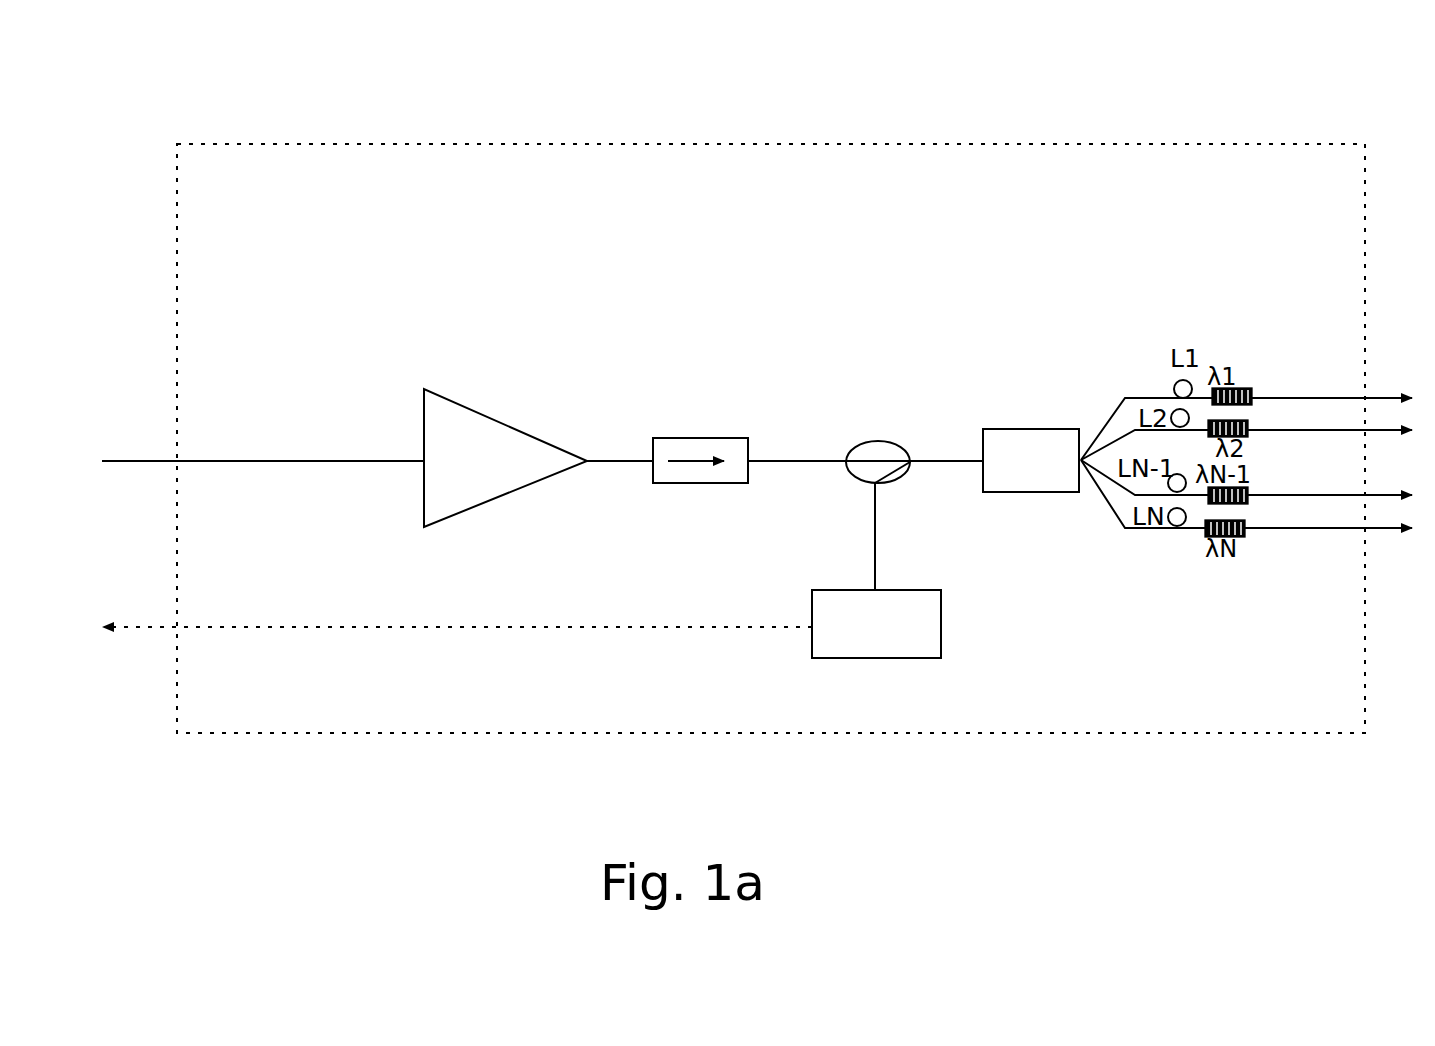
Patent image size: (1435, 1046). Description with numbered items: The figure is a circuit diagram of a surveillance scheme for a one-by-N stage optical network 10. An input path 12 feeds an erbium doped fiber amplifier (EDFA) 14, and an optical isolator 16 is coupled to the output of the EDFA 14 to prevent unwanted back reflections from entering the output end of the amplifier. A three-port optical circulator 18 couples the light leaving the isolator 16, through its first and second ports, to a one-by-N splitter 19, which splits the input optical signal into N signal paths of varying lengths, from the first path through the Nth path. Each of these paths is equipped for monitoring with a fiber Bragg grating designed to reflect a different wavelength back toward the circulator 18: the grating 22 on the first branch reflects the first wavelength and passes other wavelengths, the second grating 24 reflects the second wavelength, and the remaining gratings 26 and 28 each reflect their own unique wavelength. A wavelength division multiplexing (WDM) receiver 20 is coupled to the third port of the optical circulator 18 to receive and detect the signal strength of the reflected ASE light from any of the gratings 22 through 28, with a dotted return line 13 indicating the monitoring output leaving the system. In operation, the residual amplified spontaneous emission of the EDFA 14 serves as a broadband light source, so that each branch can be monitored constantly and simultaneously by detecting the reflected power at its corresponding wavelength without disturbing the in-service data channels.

The optical network surveillance system 10 is at (340, 137).
The input path 12 is at (205, 462).
The feedback/control signal line 13 is at (365, 627).
The erbium doped fiber amplifier 14 is at (455, 400).
The optical isolator 16 is at (697, 438).
The optical circulator 18 is at (875, 440).
The 1×N splitter 19 is at (1057, 429).
The wavelength division multiplexing receiver 20 is at (913, 590).
The grating 22 is at (1250, 390).
The second grating 24 is at (1248, 424).
The grating 26 is at (1248, 490).
The grating 28 is at (1245, 522).